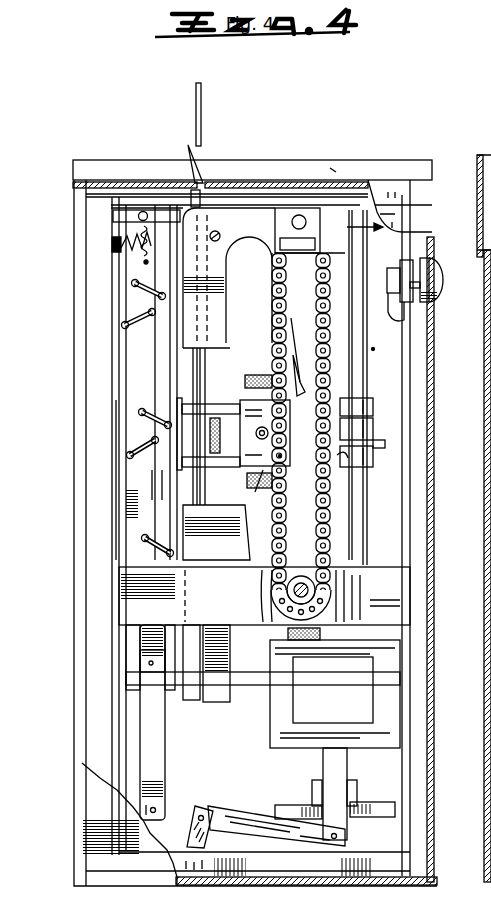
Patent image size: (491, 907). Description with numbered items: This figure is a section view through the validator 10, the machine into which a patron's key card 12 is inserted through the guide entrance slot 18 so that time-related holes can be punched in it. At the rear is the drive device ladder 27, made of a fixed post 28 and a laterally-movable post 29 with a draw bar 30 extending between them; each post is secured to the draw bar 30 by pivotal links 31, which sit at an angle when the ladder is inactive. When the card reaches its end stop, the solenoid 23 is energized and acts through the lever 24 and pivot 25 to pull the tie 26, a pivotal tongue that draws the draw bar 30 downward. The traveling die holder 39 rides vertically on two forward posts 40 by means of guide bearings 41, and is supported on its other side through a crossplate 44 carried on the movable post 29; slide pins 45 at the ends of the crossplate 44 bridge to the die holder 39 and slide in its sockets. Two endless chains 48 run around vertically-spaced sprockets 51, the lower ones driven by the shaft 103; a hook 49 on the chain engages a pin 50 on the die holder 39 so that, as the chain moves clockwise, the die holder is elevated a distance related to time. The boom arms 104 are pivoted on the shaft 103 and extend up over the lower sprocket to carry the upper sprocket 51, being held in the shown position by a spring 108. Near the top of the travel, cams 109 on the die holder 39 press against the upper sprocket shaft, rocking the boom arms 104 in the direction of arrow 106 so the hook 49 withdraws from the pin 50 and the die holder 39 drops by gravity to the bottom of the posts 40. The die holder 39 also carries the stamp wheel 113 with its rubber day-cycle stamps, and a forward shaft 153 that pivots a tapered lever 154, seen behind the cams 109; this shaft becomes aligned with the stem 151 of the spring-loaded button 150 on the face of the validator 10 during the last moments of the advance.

The validator 10 is at (431, 153).
The card 12 is at (203, 110).
The guide entrance slot 18 is at (203, 177).
The boom arms 104 is at (259, 212).
The sprockets 51 is at (333, 178).
The arrow 106 is at (380, 212).
The button 150 is at (431, 259).
The shaft or stem 151 is at (400, 321).
The spring 108 is at (121, 247).
The pivotal links 31 is at (124, 314).
The draw bar 30 is at (140, 346).
The laterally-movable post 29 is at (160, 367).
The fixed post 28 is at (127, 409).
The drive device ladder 27 is at (129, 438).
The crossplate 44 is at (177, 452).
The endless chains 48 is at (272, 289).
The tapered lever 154 is at (295, 372).
The cams 109 is at (298, 378).
The slide pins 45 is at (219, 405).
The pin 50 is at (266, 431).
The traveling die holder 39 is at (350, 379).
The posts 40 is at (333, 367).
The guide bearings 41 is at (373, 402).
The shaft 153 is at (373, 437).
The hook 49 is at (281, 457).
The stamp wheel 113 is at (258, 492).
The shaft 103 is at (312, 575).
The solenoid 23 is at (377, 704).
The tie 26 is at (166, 759).
The pivot 25 is at (203, 814).
The lever 24 is at (247, 814).